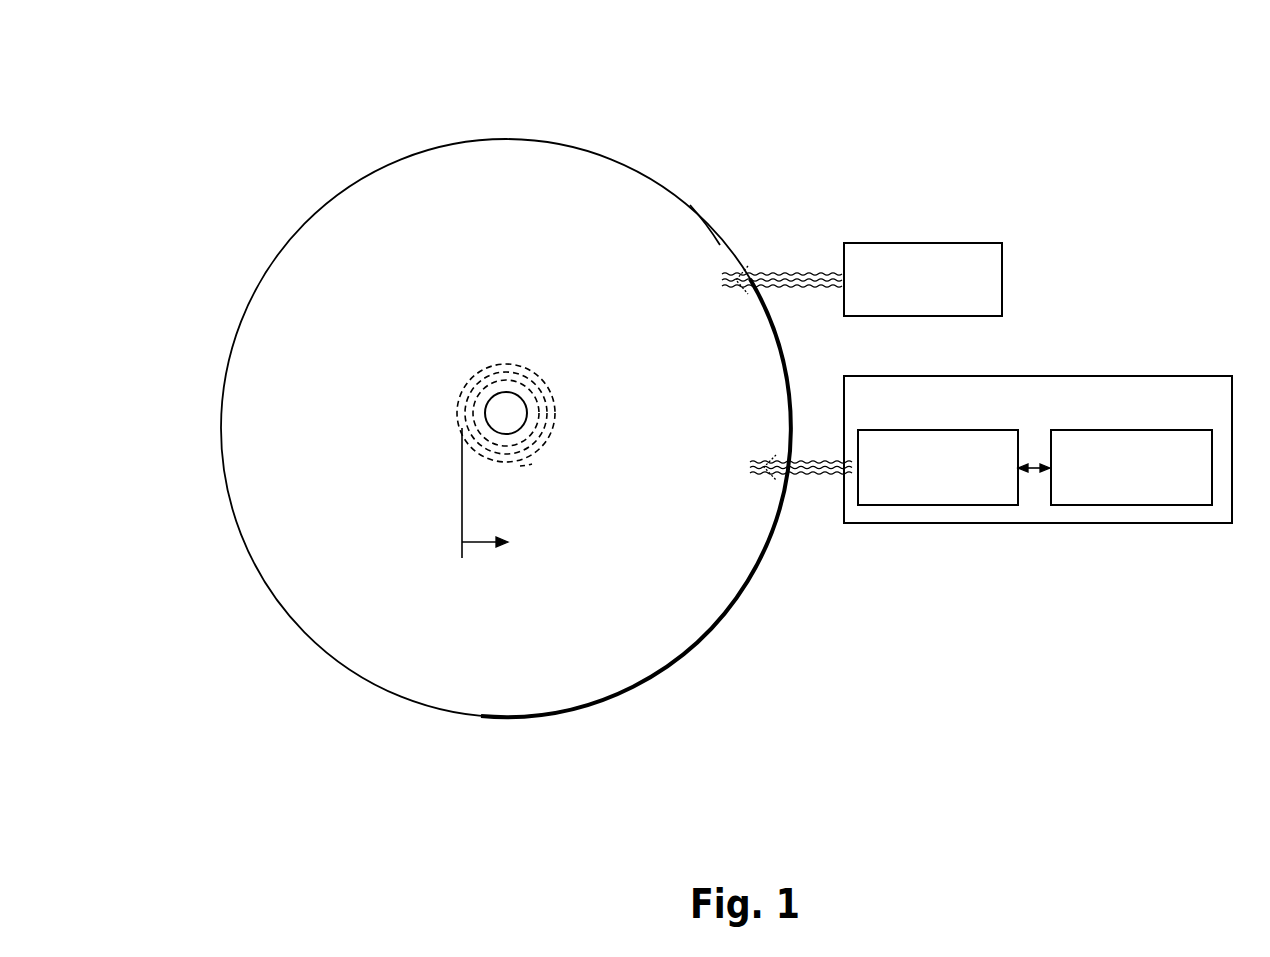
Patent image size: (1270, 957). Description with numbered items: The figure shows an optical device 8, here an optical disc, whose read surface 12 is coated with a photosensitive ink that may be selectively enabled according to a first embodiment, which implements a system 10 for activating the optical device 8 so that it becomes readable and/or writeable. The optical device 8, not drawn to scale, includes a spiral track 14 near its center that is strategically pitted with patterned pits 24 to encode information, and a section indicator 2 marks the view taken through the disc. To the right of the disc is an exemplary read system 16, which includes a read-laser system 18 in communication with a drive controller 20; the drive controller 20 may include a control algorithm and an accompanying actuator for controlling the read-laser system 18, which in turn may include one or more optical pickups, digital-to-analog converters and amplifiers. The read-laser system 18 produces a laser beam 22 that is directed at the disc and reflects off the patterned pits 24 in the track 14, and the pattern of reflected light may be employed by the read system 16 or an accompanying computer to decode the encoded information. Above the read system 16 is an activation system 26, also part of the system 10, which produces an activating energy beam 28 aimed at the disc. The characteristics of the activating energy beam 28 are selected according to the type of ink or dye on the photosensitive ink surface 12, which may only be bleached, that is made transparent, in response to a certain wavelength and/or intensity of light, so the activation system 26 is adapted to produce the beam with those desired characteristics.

The section line for Fig. 2 is at (495, 493).
The optical device 8 is at (609, 153).
The system 10 is at (938, 99).
The photosensitive-ink-coated read surface 12 is at (651, 227).
The spiral track 14 is at (548, 373).
The read system 16 is at (1103, 373).
The read-laser system 18 is at (927, 429).
The drive controller 20 is at (1138, 429).
The laser beam 22 is at (790, 478).
The patterned pits 24 is at (455, 372).
The activation system 26 is at (1003, 278).
The activating energy beam 28 is at (792, 290).